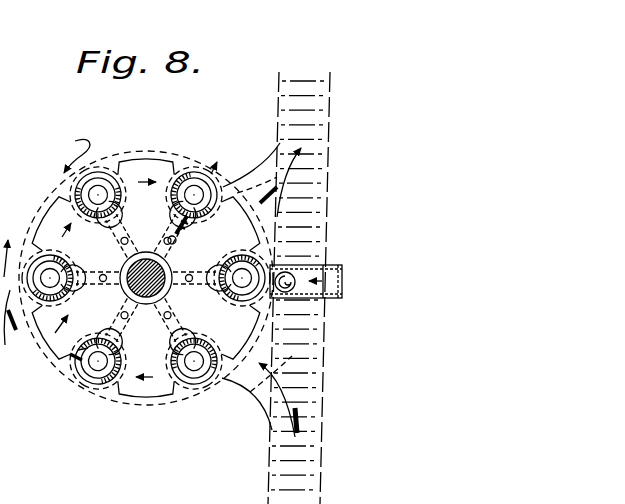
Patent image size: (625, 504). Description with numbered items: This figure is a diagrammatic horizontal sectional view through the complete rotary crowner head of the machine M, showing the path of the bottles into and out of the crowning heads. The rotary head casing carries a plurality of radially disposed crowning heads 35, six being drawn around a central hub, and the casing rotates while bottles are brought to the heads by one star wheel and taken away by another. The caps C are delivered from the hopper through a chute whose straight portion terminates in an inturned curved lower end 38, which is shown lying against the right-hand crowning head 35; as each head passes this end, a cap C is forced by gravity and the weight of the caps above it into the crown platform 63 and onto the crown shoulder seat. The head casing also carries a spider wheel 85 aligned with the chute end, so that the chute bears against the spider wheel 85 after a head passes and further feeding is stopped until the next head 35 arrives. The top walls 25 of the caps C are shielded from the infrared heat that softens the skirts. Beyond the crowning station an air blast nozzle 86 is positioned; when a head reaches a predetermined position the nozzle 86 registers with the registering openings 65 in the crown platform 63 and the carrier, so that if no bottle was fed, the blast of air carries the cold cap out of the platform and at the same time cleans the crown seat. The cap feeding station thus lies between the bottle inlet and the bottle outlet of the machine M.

The crowning head 35 is at (100, 163).
The registering openings 65 is at (104, 228).
The top walls of the caps 25 is at (249, 307).
The air blast nozzle 86 is at (178, 238).
The crown platform 63 is at (84, 357).
The spider wheel 85 is at (139, 396).
The machine M is at (73, 154).
The inturned curved lower end 38 is at (309, 277).
The caps C is at (306, 262).